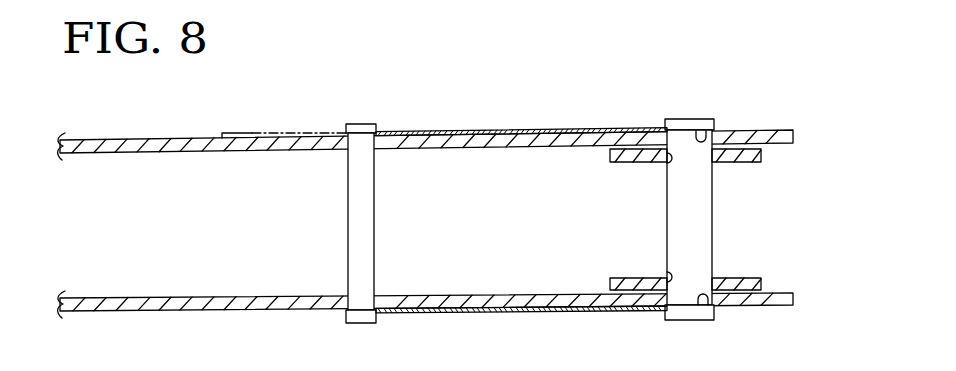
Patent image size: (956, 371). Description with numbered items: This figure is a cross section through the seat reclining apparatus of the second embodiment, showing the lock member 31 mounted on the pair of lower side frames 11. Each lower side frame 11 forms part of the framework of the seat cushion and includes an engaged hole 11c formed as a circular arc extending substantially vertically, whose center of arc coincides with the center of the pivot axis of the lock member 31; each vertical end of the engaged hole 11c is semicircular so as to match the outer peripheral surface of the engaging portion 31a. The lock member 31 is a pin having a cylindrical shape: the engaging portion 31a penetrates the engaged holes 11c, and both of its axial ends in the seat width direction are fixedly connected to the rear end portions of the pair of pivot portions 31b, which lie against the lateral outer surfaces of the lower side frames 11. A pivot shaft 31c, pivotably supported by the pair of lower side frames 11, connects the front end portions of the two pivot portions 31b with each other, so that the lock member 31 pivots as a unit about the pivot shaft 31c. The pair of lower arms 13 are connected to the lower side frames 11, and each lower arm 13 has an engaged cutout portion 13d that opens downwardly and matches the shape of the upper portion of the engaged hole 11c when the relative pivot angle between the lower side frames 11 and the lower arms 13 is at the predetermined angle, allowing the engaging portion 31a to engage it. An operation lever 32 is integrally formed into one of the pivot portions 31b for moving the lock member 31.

The lower side frame 11 is at (160, 139).
The engaged hole 11c is at (695, 119).
The lower arm 13 is at (761, 153).
The engaged cutout portion 13d is at (668, 163).
The lock member 31 is at (529, 224).
The engaging portion 31a is at (713, 212).
The pivot portion 31b is at (468, 131).
The pivot shaft 31c is at (347, 224).
The operation lever 32 is at (289, 133).